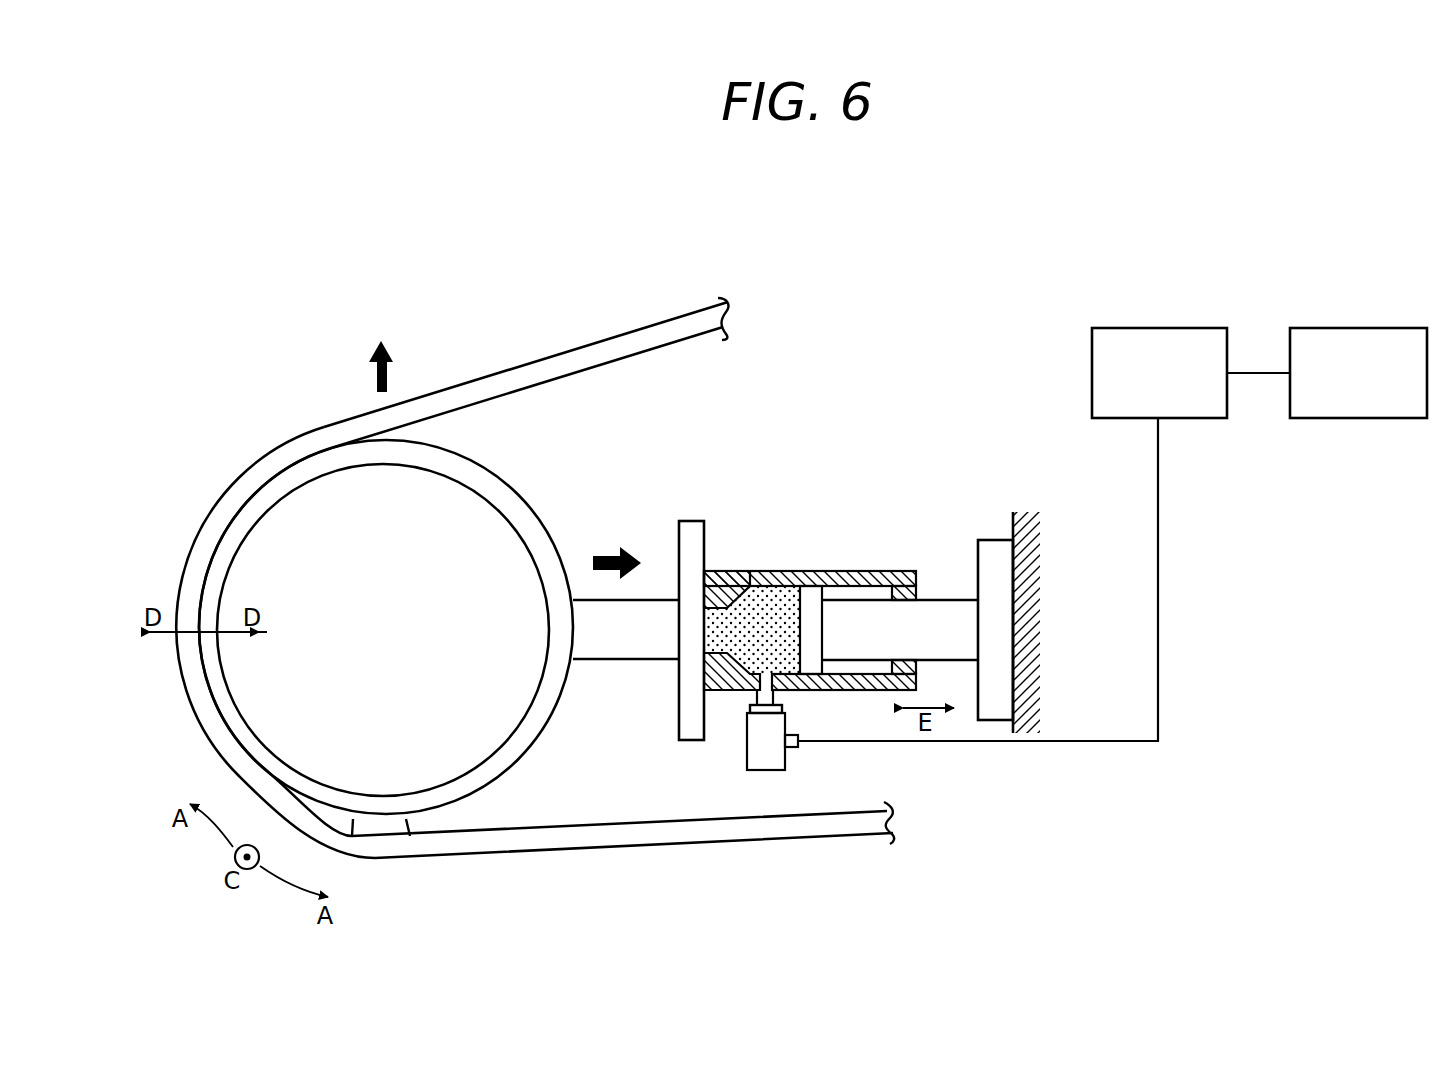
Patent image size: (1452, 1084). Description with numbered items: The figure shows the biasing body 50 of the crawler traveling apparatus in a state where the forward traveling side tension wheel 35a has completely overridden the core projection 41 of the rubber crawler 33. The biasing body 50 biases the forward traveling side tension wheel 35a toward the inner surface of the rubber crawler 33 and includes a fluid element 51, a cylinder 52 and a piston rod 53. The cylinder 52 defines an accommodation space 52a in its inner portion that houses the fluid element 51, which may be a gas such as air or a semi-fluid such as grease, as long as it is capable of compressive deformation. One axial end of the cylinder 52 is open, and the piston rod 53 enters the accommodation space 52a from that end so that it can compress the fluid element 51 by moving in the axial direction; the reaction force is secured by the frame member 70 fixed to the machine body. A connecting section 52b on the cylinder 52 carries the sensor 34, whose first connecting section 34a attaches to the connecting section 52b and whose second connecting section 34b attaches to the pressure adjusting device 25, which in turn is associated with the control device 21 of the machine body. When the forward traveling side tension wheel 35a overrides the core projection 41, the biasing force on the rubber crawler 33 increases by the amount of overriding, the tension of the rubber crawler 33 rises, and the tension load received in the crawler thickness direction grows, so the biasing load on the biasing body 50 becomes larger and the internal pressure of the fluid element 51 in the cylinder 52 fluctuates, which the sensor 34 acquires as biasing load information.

The rubber crawler 33 is at (628, 340).
The forward traveling side tension wheel 35a is at (398, 645).
The core projection 41 is at (385, 828).
The biasing body 50 is at (851, 510).
The fluid element 51 is at (730, 632).
The cylinder 52 is at (813, 571).
The accommodation space 52a is at (757, 610).
The connecting section 52b is at (776, 696).
The piston rod 53 is at (938, 624).
The frame member 70 is at (1013, 528).
The sensor 34 is at (772, 747).
The first connecting section 34a is at (784, 710).
The second connecting section 34b is at (795, 748).
The pressure adjusting device 25 is at (1143, 387).
The control device 21 is at (1343, 387).